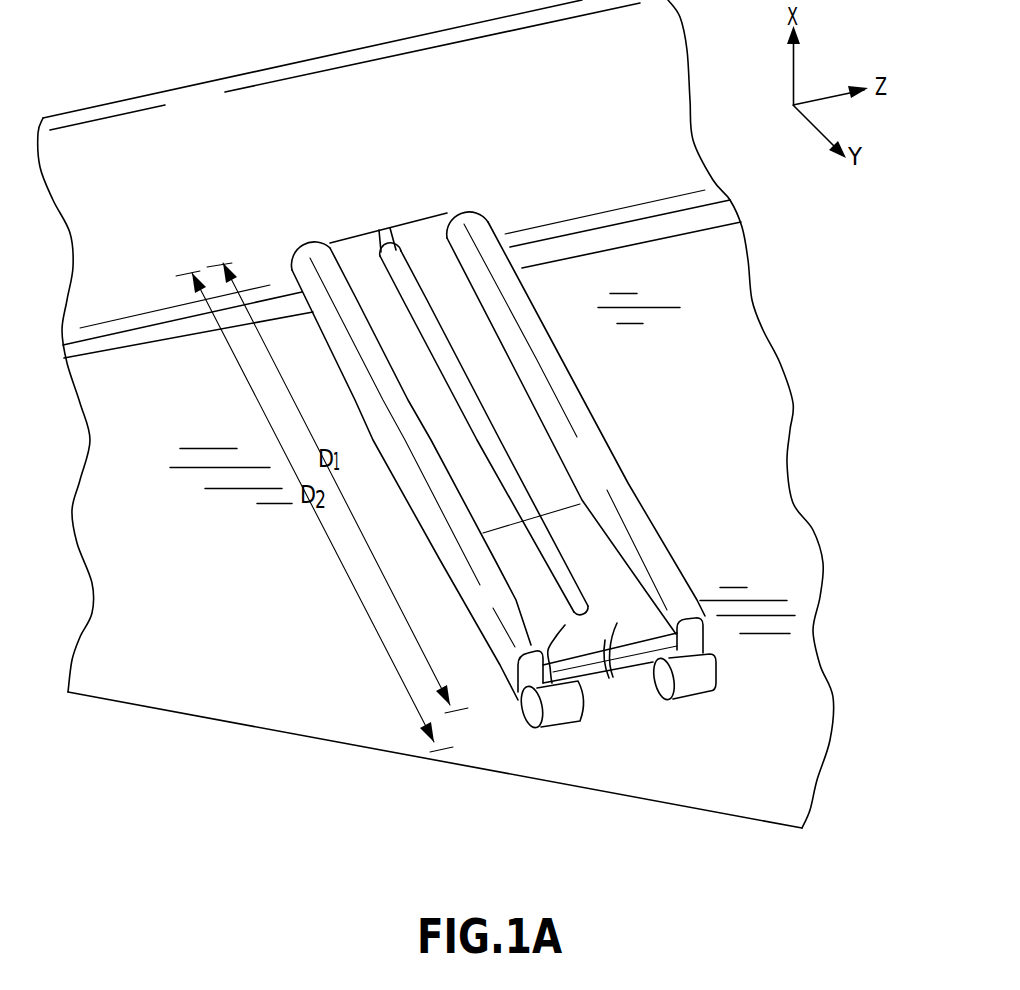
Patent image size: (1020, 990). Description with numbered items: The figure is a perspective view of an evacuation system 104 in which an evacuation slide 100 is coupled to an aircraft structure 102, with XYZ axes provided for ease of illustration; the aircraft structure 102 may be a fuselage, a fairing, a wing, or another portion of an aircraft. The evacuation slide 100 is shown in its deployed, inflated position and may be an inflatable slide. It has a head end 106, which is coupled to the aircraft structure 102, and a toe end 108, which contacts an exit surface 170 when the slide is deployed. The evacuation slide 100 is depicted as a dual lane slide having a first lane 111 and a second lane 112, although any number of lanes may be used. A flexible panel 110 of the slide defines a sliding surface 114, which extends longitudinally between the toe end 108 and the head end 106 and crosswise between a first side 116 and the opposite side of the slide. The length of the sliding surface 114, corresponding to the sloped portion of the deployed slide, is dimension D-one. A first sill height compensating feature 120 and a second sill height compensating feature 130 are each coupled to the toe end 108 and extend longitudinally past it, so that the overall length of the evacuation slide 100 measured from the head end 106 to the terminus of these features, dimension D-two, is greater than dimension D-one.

The evacuation slide 100 is at (587, 393).
The aircraft structure 102 is at (543, 118).
The evacuation system 104 is at (650, 268).
The head end 106 is at (300, 186).
The toe end 108 is at (623, 692).
The flexible panel 110 is at (482, 353).
The first lane 111 is at (552, 683).
The second lane 112 is at (618, 652).
The sliding surface 114 is at (447, 443).
The first side 116 is at (470, 538).
The first sill height compensating feature 120 is at (537, 723).
The second sill height compensating feature 130 is at (708, 675).
The exit surface 170 is at (280, 730).